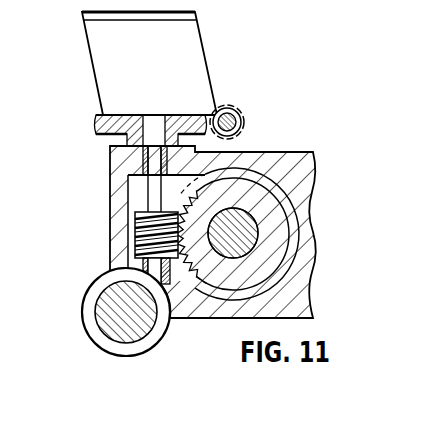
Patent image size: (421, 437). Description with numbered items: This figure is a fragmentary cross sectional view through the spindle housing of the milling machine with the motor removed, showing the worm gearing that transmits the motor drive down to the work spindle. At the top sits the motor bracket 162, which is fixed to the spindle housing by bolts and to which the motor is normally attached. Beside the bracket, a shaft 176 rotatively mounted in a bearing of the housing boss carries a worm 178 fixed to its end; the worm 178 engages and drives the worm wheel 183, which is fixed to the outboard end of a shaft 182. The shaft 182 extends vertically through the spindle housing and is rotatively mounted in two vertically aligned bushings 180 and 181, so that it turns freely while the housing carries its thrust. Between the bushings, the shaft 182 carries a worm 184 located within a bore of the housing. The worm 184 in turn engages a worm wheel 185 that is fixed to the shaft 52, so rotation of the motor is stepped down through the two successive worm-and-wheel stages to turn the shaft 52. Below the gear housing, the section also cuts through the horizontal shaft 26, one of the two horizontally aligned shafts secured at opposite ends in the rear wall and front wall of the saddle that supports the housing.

The motor bracket 162 is at (153, 72).
The worm wheel 183 is at (103, 134).
The shaft 176 is at (231, 106).
The worm 178 is at (243, 115).
The bushing 180 is at (118, 172).
The bushing 181 is at (130, 268).
The shaft 182 is at (140, 196).
The worm 184 is at (136, 245).
The shaft 52 is at (253, 208).
The worm wheel 185 is at (198, 312).
The horizontal shaft 26 is at (123, 341).